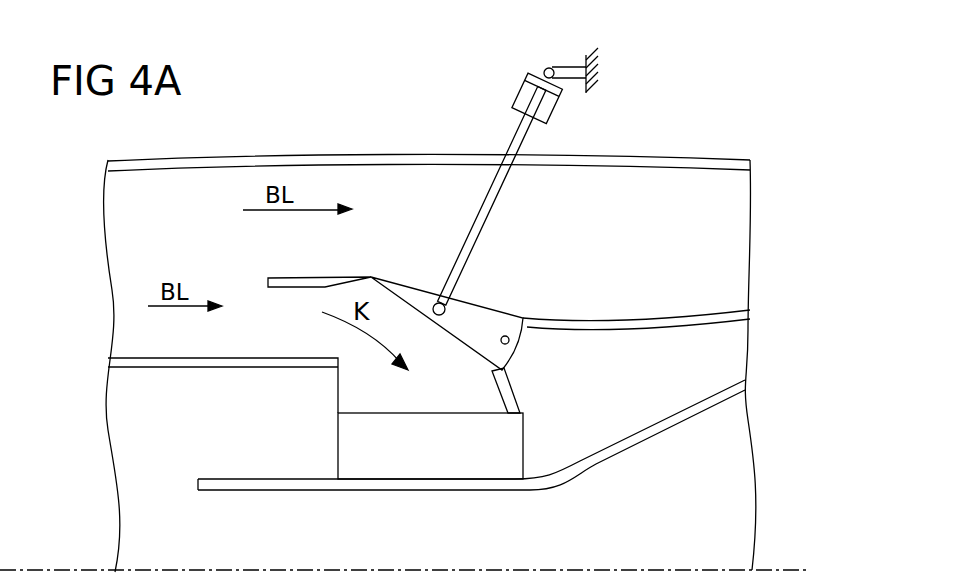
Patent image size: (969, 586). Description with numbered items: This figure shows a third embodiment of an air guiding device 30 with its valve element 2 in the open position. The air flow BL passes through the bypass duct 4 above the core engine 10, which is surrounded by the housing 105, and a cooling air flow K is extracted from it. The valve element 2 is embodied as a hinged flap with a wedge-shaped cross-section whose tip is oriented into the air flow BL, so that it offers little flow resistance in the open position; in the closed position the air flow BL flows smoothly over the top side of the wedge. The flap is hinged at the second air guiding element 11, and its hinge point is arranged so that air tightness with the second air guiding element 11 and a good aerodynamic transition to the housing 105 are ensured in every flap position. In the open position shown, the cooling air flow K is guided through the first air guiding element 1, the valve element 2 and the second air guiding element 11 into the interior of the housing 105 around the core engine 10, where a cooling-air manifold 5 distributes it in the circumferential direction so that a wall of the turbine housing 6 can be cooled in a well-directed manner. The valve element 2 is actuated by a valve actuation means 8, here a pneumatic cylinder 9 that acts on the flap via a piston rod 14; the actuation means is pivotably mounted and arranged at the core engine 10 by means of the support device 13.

The first air guiding element 1 is at (328, 282).
The valve element 2 is at (487, 317).
The bypass duct 4 is at (648, 251).
The cooling-air manifold 5 is at (508, 440).
The turbine housing 6 is at (658, 427).
The valve actuation means 8 is at (565, 113).
The pneumatic cylinder 9 is at (534, 72).
The core engine 10 is at (632, 543).
The second air guiding element 11 is at (507, 393).
The support device 13 is at (573, 66).
The piston rod 14 is at (487, 202).
The air guiding device 30 is at (502, 263).
The housing 105 is at (192, 358).